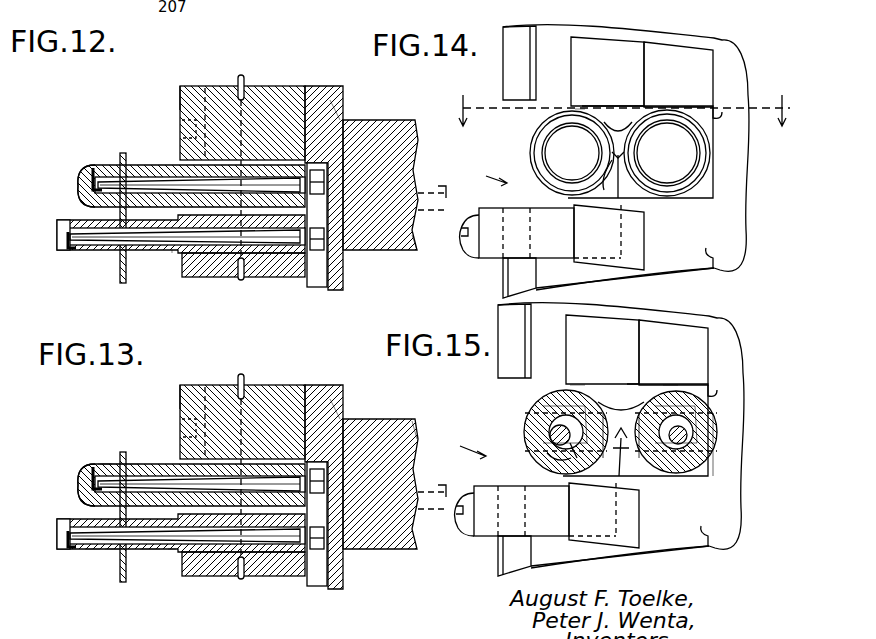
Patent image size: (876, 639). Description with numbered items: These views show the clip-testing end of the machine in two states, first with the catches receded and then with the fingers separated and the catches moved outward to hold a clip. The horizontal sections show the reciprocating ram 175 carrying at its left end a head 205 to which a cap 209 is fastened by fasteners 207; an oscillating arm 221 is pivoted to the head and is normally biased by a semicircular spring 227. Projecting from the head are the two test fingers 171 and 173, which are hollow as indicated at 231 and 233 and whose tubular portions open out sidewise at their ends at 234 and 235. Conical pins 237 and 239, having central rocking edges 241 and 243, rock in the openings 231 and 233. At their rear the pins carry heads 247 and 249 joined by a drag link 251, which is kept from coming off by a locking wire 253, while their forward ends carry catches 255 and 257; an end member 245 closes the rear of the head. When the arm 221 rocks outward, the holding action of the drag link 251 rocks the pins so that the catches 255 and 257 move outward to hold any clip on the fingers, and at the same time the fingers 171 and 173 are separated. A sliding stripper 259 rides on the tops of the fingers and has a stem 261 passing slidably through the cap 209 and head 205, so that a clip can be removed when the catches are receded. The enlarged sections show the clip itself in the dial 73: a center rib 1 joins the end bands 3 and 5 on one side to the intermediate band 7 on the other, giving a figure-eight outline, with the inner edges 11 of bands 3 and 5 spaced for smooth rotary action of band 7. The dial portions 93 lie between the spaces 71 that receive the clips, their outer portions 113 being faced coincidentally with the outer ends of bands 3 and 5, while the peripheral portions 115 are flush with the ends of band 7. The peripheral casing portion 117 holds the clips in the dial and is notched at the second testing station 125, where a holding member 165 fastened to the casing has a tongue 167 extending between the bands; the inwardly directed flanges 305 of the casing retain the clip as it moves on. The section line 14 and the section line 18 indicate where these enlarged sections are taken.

In FIG. 14, the nozzle slot 1 is at (620, 140).
In FIG. 15, the nozzle slot 1 is at (621, 419).
In FIG. 13, the nozzle tube 3 is at (96, 572).
In FIG. 14, the nozzle tube 3 is at (545, 153).
In FIG. 15, the nozzle tube 3 is at (601, 432).
In FIG. 13, the nozzle sleeve 5 is at (146, 579).
In FIG. 14, the nozzle sleeve 5 is at (534, 137).
In FIG. 15, the nozzle sleeve 5 is at (552, 438).
In FIG. 13, the nozzle block 7 is at (119, 444).
In FIG. 14, the nozzle block 7 is at (702, 175).
In FIG. 15, the nozzle block 7 is at (660, 430).
In FIG. 13, the nozzle tip 11 is at (120, 570).
In FIG. 13, the nozzle head 14 is at (94, 433).
In FIG. 14, the nozzle head 14 is at (600, 106).
In FIG. 15, the nozzle head 14 is at (594, 371).
In FIG. 14, the section line 18 is at (613, 102).
In FIG. 14, the housing recess 71 is at (718, 116).
In FIG. 15, the housing recess 71 is at (719, 445).
In FIG. 14, the housing wall 73 is at (742, 163).
In FIG. 15, the housing wall 73 is at (637, 435).
In FIG. 14, the guide block 93 is at (571, 72).
In FIG. 15, the guide block 93 is at (556, 425).
In FIG. 14, the guide plate 113 is at (644, 70).
In FIG. 15, the guide plate 113 is at (638, 425).
In FIG. 14, the mounting surface 115 is at (697, 106).
In FIG. 15, the mounting surface 115 is at (665, 367).
In FIG. 14, the bottom wall 117 is at (630, 274).
In FIG. 15, the bottom wall 117 is at (620, 560).
In FIG. 14, the direction of view 125 is at (483, 171).
In FIG. 15, the direction of view 125 is at (459, 441).
In FIG. 14, the end boss 165 is at (484, 258).
In FIG. 15, the end boss 165 is at (471, 532).
In FIG. 14, the separating rod 167 is at (630, 202).
In FIG. 15, the separating rod 167 is at (651, 478).
In FIG. 12, the lower tube 171 is at (68, 220).
In FIG. 13, the lower tube 171 is at (167, 533).
In FIG. 15, the lower tube 171 is at (562, 391).
In FIG. 12, the upper tube 173 is at (110, 165).
In FIG. 13, the upper tube 173 is at (175, 494).
In FIG. 15, the upper tube 173 is at (683, 396).
In FIG. 12, the mounting block 175 is at (404, 240).
In FIG. 13, the mounting block 175 is at (410, 417).
In FIG. 12, the end block 205 is at (318, 87).
In FIG. 13, the end block 205 is at (324, 470).
In FIG. 12, the body block 207 is at (180, 110).
In FIG. 13, the body block 207 is at (164, 396).
In FIG. 12, the body block 209 is at (268, 90).
In FIG. 13, the body block 209 is at (242, 410).
In FIG. 12, the lower body block 221 is at (226, 270).
In FIG. 13, the lower body block 221 is at (244, 583).
In FIG. 12, the clamping bolt 227 is at (241, 76).
In FIG. 13, the clamping bolt 227 is at (249, 483).
In FIG. 12, the lower mandrel 231 is at (140, 250).
In FIG. 13, the lower mandrel 231 is at (185, 569).
In FIG. 15, the lower mandrel 231 is at (586, 476).
In FIG. 12, the upper mandrel 233 is at (150, 175).
In FIG. 13, the upper mandrel 233 is at (191, 471).
In FIG. 15, the upper mandrel 233 is at (699, 460).
In FIG. 12, the lower tube end 234 is at (60, 248).
In FIG. 13, the lower tube end 234 is at (48, 547).
In FIG. 12, the upper tube end 235 is at (85, 180).
In FIG. 13, the upper tube end 235 is at (71, 478).
In FIG. 12, the lower passage 237 is at (208, 258).
In FIG. 13, the lower passage 237 is at (188, 589).
In FIG. 15, the lower passage 237 is at (532, 465).
In FIG. 12, the bolt hole 239 is at (205, 88).
In FIG. 13, the bolt hole 239 is at (217, 409).
In FIG. 15, the bolt hole 239 is at (744, 457).
In FIG. 12, the lower sleeve 241 is at (172, 262).
In FIG. 13, the lower sleeve 241 is at (162, 575).
In FIG. 12, the upper sleeve 243 is at (182, 140).
In FIG. 13, the upper sleeve 243 is at (173, 425).
In FIG. 12, the end plate 245 is at (314, 280).
In FIG. 13, the end plate 245 is at (333, 542).
In FIG. 12, the lower nut 247 is at (326, 258).
In FIG. 13, the lower nut 247 is at (348, 554).
In FIG. 12, the support block 249 is at (360, 125).
In FIG. 13, the support block 249 is at (380, 472).
In FIG. 12, the shoulder 251 is at (342, 112).
In FIG. 13, the shoulder 251 is at (355, 398).
In FIG. 12, the upper nut 253 is at (322, 238).
In FIG. 13, the upper nut 253 is at (366, 517).
In FIG. 12, the lower tube lip 255 is at (70, 252).
In FIG. 13, the lower tube lip 255 is at (76, 567).
In FIG. 15, the lower tube lip 255 is at (521, 433).
In FIG. 12, the upper tube lip 257 is at (93, 167).
In FIG. 13, the upper tube lip 257 is at (80, 458).
In FIG. 15, the upper tube lip 257 is at (707, 432).
In FIG. 12, the locating pin 259 is at (123, 283).
In FIG. 13, the locating pin 259 is at (135, 501).
In FIG. 12, the axis 261 is at (437, 192).
In FIG. 13, the axis 261 is at (430, 488).
In FIG. 14, the side plate 305 is at (535, 50).
In FIG. 15, the side plate 305 is at (493, 448).